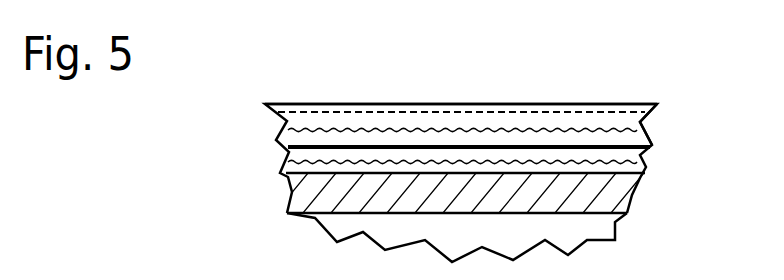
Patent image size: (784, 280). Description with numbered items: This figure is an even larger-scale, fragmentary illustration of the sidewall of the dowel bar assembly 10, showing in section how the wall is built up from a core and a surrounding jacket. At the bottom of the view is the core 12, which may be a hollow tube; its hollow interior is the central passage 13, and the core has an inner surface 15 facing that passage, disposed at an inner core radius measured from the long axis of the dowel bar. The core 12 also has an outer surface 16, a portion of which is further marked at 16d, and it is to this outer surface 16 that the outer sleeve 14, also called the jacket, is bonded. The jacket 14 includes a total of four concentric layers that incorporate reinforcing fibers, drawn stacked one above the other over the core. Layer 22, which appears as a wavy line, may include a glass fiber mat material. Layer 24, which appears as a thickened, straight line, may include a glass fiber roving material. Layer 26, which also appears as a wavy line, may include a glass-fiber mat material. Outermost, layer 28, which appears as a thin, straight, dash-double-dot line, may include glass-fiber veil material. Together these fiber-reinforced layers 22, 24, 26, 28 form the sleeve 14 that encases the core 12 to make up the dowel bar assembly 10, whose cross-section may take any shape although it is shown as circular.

The dowel bar assembly 10 is at (611, 53).
The core 12 is at (607, 198).
The central passage 13 is at (472, 251).
The outer sleeve 14 is at (482, 98).
The inner surface 15 is at (343, 216).
The outer surface 16 is at (346, 176).
The cover layer edge 16d is at (628, 122).
The layer 22 is at (641, 170).
The layer 24 is at (289, 155).
The layer 26 is at (640, 142).
The layer 28 is at (287, 119).